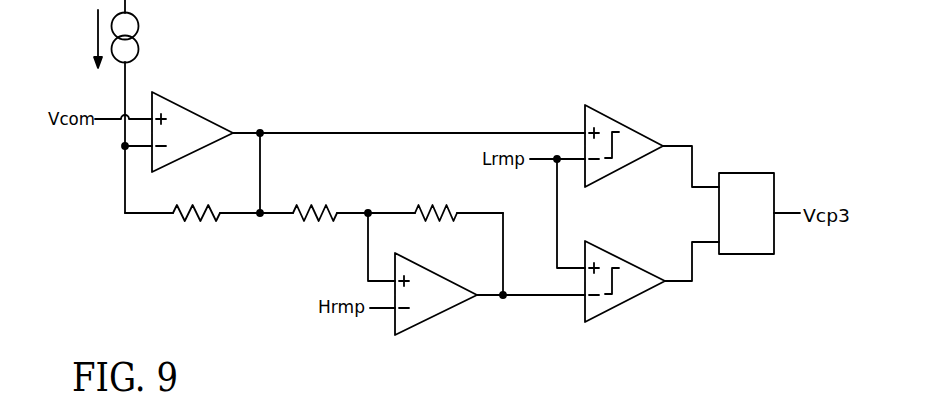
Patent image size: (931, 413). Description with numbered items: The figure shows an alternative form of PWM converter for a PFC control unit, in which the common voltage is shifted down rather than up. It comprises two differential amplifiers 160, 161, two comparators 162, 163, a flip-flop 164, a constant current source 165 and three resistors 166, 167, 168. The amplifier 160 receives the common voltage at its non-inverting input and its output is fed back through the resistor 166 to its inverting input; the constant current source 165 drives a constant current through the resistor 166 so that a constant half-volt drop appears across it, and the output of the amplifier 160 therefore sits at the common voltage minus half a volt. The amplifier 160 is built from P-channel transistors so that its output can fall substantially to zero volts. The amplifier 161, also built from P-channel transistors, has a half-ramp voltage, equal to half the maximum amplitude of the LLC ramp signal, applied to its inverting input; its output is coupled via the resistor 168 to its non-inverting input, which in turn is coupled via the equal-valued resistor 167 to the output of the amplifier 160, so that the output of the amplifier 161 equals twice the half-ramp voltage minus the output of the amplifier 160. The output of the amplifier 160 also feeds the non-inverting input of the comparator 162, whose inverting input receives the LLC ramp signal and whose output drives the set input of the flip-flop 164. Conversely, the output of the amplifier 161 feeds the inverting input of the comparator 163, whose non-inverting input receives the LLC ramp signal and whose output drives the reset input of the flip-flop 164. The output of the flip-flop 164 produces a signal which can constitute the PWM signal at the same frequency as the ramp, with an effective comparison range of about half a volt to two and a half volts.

The differential amplifier 160 is at (192, 122).
The differential amplifier 161 is at (443, 308).
The comparator 162 is at (638, 137).
The comparator 163 is at (638, 272).
The flip-flop 164 is at (756, 172).
The constant current source 165 is at (139, 39).
The resistor 166 is at (192, 222).
The resistor 167 is at (318, 200).
The resistor 168 is at (440, 200).